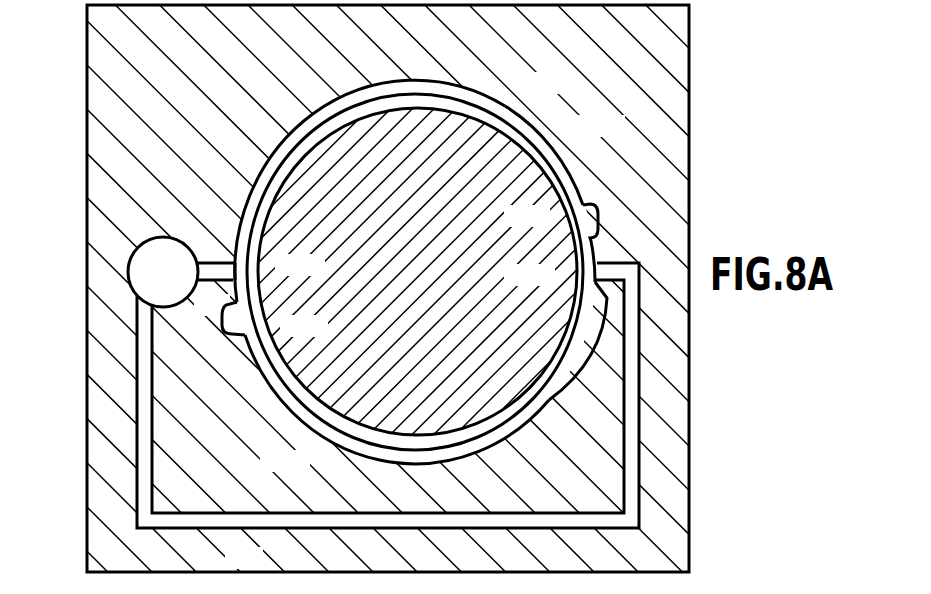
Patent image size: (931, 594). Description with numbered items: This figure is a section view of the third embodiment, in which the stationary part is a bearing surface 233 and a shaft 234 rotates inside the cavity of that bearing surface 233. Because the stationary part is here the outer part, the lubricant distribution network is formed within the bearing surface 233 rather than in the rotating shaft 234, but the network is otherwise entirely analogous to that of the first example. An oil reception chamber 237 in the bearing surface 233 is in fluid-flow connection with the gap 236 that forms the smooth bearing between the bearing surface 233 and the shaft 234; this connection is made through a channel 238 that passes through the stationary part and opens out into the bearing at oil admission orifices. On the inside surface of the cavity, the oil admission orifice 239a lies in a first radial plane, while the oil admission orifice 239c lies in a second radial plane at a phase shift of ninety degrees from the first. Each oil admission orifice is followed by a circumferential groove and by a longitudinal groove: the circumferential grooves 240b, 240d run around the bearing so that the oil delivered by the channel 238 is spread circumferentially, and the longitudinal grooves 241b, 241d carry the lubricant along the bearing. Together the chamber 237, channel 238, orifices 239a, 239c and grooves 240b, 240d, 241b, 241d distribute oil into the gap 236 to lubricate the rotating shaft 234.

The bearing surface 233 is at (105, 122).
The shaft 234 is at (423, 282).
The gap 236 is at (498, 122).
The oil reception chamber 237 is at (180, 280).
The channel 238 is at (237, 287).
The oil admission orifice 239a is at (252, 262).
The oil admission orifice 239c is at (590, 270).
The circumferential groove 240b is at (559, 153).
The circumferential groove 240d is at (323, 440).
The longitudinal groove 241b is at (590, 222).
The longitudinal groove 241d is at (255, 330).